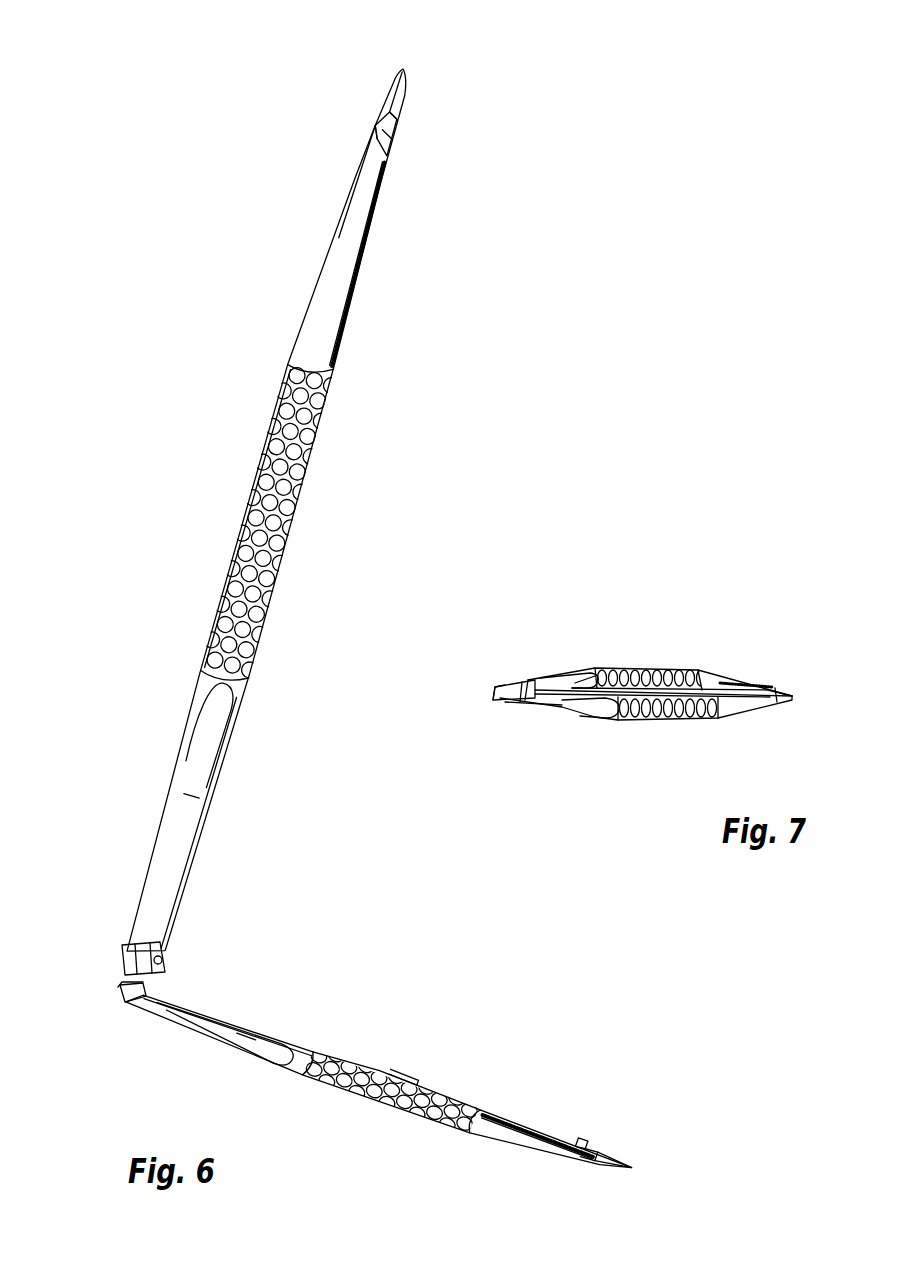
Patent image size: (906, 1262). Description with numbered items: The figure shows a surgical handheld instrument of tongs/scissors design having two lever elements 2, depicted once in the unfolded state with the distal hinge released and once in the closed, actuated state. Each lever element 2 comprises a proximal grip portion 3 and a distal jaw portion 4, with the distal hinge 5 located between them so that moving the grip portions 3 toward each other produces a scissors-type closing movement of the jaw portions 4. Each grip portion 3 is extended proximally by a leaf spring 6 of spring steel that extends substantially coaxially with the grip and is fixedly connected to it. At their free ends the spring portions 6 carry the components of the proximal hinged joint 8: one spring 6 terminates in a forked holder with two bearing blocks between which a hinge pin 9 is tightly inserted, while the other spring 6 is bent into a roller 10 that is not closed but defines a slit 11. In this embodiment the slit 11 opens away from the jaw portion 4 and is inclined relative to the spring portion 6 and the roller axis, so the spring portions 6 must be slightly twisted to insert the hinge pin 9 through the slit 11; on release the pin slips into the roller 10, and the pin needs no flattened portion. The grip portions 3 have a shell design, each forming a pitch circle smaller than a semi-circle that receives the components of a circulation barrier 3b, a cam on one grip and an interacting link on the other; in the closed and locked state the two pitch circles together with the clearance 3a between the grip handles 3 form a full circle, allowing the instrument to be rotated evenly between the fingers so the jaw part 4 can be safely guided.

In FIG. 6, the lever element 2 is at (224, 439).
In FIG. 7, the lever element 2 is at (646, 694).
In FIG. 6, the grip portion 3 is at (292, 533).
In FIG. 7, the grip portion 3 is at (642, 672).
In FIG. 7, the clearance 3a is at (575, 682).
In FIG. 6, the circulation barrier 3b is at (403, 1060).
In FIG. 6, the jaw portion 4 is at (405, 95).
In FIG. 6, the distal hinge 5 is at (380, 147).
In FIG. 6, the spring 6 is at (197, 830).
In FIG. 7, the spring 6 is at (552, 676).
In FIG. 6, the hinged joint 8 is at (213, 965).
In FIG. 6, the hinge pin 9 is at (131, 962).
In FIG. 6, the roller 10 is at (122, 999).
In FIG. 6, the slit 11 is at (118, 988).
In FIG. 7, the slit 11 is at (500, 701).